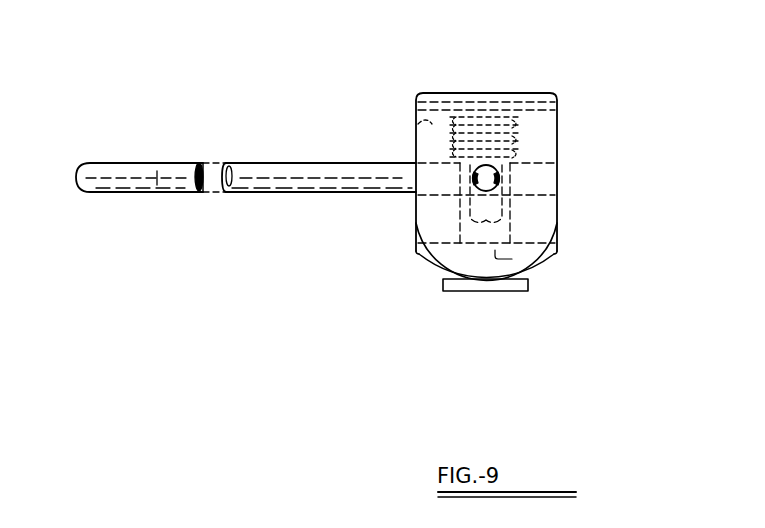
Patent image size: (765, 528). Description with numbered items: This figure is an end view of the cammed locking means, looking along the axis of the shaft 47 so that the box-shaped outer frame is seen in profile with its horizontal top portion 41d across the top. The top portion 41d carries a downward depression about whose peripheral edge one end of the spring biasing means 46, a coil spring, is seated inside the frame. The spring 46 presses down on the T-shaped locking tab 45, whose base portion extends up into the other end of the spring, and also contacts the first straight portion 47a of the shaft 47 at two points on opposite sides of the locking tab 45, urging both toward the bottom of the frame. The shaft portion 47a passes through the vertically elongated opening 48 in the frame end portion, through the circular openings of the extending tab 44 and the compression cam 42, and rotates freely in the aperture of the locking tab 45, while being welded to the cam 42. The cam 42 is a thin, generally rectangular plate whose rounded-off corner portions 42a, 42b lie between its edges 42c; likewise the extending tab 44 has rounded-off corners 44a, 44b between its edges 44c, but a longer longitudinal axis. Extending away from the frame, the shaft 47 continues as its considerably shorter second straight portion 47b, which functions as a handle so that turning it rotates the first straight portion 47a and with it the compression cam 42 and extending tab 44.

The compression cam 42 is at (445, 93).
The horizontal top portion 41d is at (506, 103).
The extending tab 44 is at (416, 116).
The spring biasing means 46 is at (516, 141).
The vertically elongated opening 48 is at (510, 205).
The rounded-off corner portion 42a is at (432, 251).
The rounded-off corner portion 42b is at (548, 253).
The edge 42c is at (530, 265).
The rounded-off corner portion 44a is at (443, 271).
The rounded-off corner portion 44b is at (532, 274).
The edge 44c is at (468, 282).
The T-shaped locking tab 45 is at (505, 291).
The shaft 47 is at (262, 163).
The first straight portion 47a is at (346, 193).
The second straight portion 47b is at (93, 194).